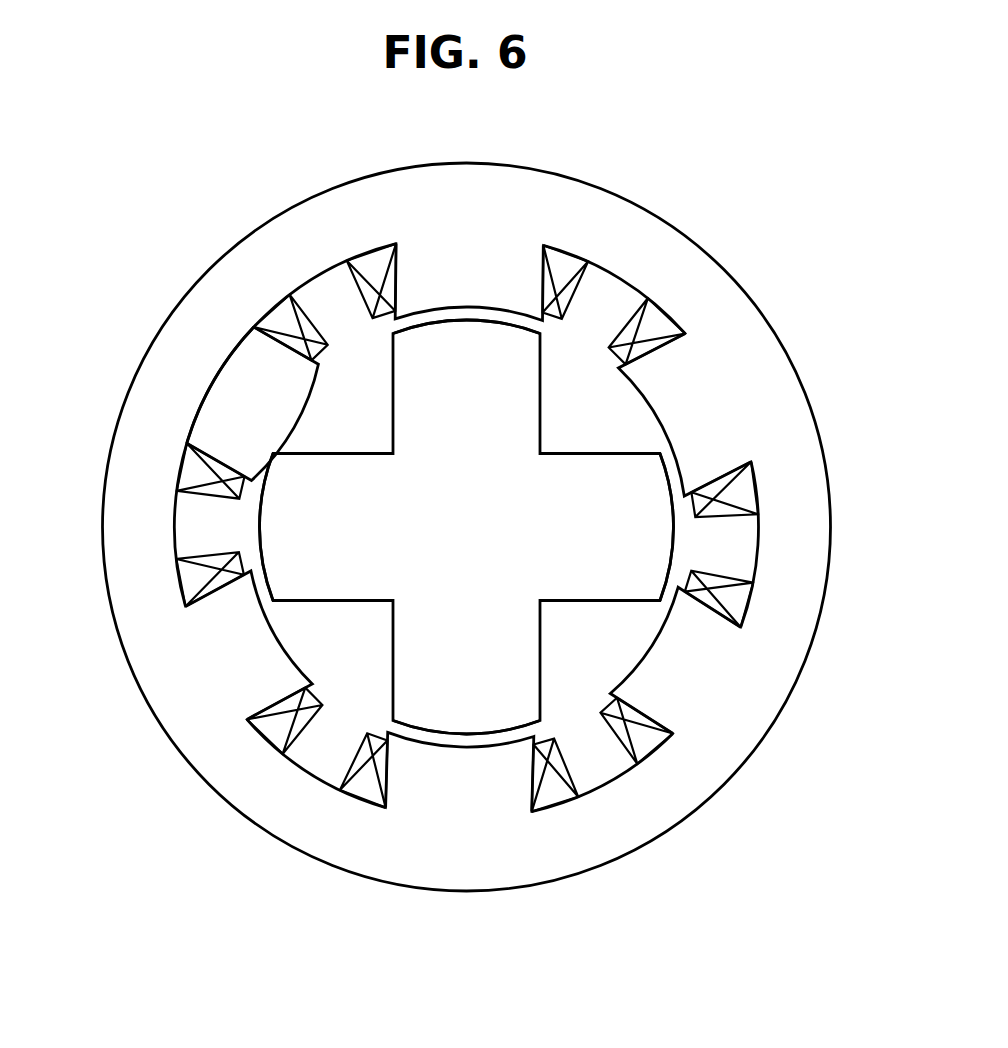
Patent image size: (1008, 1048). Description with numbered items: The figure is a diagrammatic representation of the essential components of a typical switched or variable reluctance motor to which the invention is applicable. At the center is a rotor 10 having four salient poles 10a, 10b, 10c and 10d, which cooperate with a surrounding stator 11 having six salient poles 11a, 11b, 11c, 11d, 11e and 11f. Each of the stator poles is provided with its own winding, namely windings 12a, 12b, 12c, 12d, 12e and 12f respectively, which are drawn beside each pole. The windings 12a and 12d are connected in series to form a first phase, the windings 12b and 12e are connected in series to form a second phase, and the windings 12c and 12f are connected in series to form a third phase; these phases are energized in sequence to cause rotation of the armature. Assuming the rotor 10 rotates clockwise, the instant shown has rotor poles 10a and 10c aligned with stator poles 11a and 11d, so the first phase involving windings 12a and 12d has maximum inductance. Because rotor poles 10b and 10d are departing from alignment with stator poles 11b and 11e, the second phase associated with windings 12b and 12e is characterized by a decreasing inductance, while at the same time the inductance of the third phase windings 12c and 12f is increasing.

The rotor 10 is at (477, 544).
The rotor salient pole 10a is at (467, 323).
The rotor salient pole 10b is at (673, 523).
The rotor salient pole 10c is at (457, 732).
The rotor salient pole 10d is at (258, 527).
The stator 11 is at (543, 172).
The stator salient pole 11a is at (467, 308).
The stator salient pole 11b is at (658, 418).
The stator salient pole 11c is at (653, 647).
The stator salient pole 11d is at (463, 750).
The stator salient pole 11e is at (270, 633).
The stator salient pole 11f is at (285, 407).
The winding 12a is at (375, 262).
The winding 12b is at (667, 322).
The winding 12c is at (747, 600).
The winding 12d is at (362, 788).
The winding 12e is at (187, 580).
The winding 12f is at (282, 317).